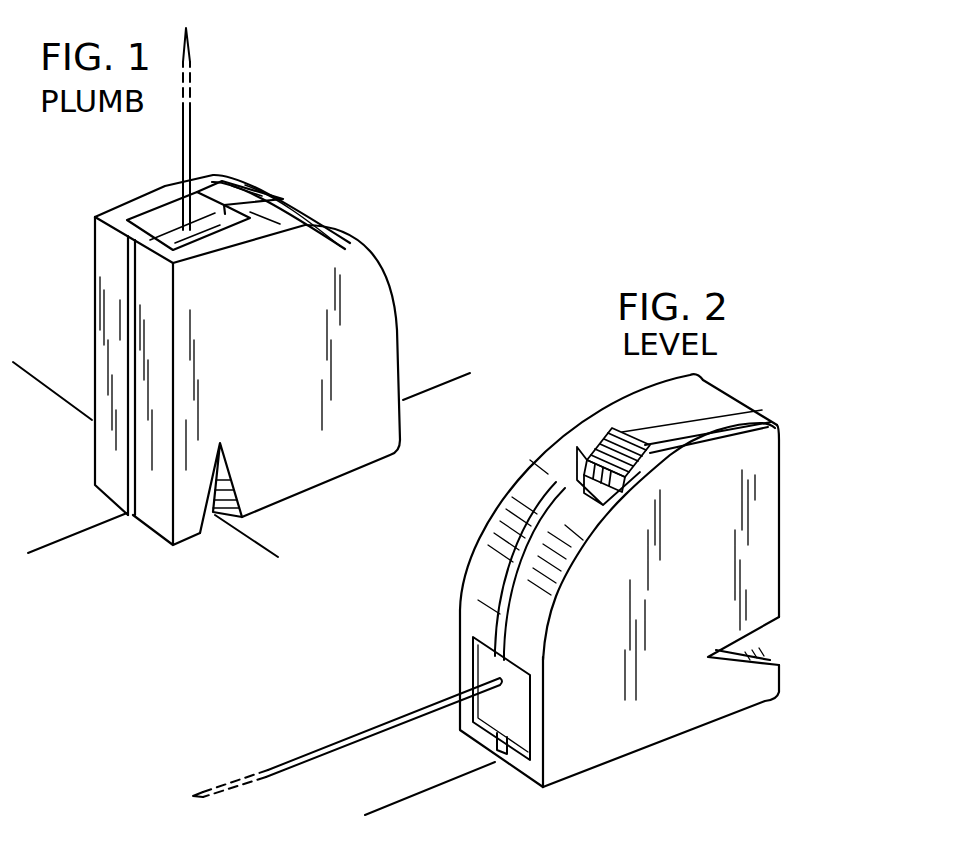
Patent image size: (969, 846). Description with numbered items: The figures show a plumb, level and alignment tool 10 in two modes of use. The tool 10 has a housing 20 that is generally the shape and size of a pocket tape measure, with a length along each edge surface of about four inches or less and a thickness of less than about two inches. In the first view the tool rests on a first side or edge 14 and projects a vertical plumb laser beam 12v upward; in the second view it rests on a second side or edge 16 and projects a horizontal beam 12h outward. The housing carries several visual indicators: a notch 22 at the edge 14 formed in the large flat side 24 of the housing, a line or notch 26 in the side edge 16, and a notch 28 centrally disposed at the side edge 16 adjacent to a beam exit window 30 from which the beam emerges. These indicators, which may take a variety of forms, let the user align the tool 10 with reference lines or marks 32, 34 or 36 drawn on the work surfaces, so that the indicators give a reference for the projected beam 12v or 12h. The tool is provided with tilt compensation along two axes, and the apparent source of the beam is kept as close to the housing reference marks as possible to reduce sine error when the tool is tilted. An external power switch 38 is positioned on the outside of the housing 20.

In FIG. 1, the plumb, level and alignment tool 10 is at (390, 222).
In FIG. 2, the plumb, level and alignment tool 10 is at (590, 398).
In FIG. 1, the vertical plumb laser beam 12v is at (192, 138).
In FIG. 2, the horizontal beam 12h is at (435, 700).
In FIG. 1, the first side or edge 14 is at (353, 477).
In FIG. 2, the first side or edge 14 is at (782, 567).
In FIG. 1, the second side or edge 16 is at (100, 323).
In FIG. 2, the second side or edge 16 is at (705, 727).
In FIG. 1, the housing 20 is at (383, 297).
In FIG. 2, the housing 20 is at (762, 508).
In FIG. 1, the notch 22 is at (225, 487).
In FIG. 2, the notch 22 is at (773, 647).
In FIG. 1, the large flat side 24 is at (303, 362).
In FIG. 2, the large flat side 24 is at (686, 607).
In FIG. 1, the line or notch 26 is at (133, 453).
In FIG. 2, the line or notch 26 is at (633, 537).
In FIG. 1, the notch 28 is at (122, 232).
In FIG. 2, the notch 28 is at (500, 745).
In FIG. 1, the beam exit window 30 is at (165, 230).
In FIG. 2, the beam exit window 30 is at (512, 708).
In FIG. 1, the reference line or mark 32 is at (257, 543).
In FIG. 1, the reference line or mark 34 is at (68, 537).
In FIG. 2, the reference line or mark 36 is at (423, 793).
In FIG. 2, the external power switch 38 is at (588, 447).